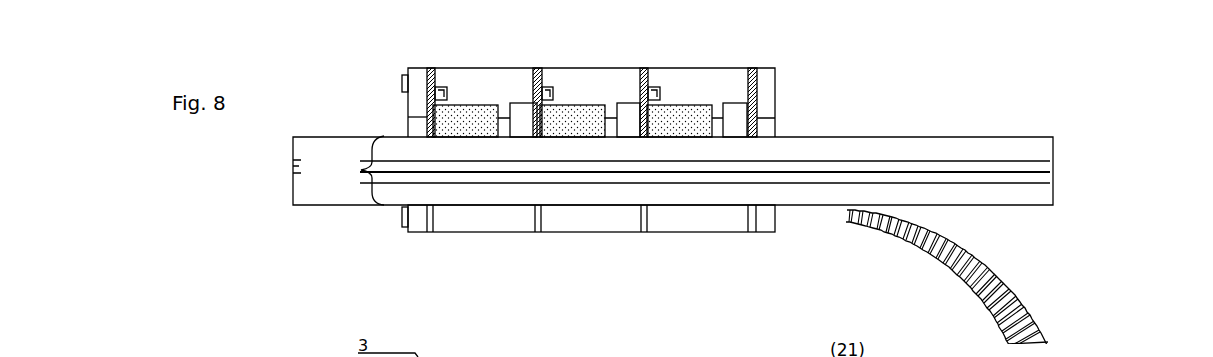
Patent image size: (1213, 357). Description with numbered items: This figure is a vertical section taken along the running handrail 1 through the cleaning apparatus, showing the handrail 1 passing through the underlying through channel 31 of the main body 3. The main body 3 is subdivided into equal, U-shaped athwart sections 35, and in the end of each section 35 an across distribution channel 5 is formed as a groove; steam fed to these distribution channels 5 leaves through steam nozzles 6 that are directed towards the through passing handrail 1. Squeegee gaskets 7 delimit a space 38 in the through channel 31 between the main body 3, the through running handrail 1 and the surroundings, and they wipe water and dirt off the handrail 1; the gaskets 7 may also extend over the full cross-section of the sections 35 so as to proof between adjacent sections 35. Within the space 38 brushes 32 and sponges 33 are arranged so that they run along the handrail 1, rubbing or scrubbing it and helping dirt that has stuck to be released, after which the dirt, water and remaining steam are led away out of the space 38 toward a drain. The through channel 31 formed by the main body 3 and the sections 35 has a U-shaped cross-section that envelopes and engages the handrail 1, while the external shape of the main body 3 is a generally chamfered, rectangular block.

The handrail 1 is at (1040, 157).
The main body 3 is at (632, 50).
The distribution channel 5 is at (432, 113).
The steam nozzle 6 is at (438, 92).
The squeegee gasket 7 is at (432, 117).
The through channel 31 is at (338, 170).
The brush 32 is at (460, 123).
The sponge 33 is at (575, 133).
The space 38 is at (685, 133).
The section 35 is at (700, 232).